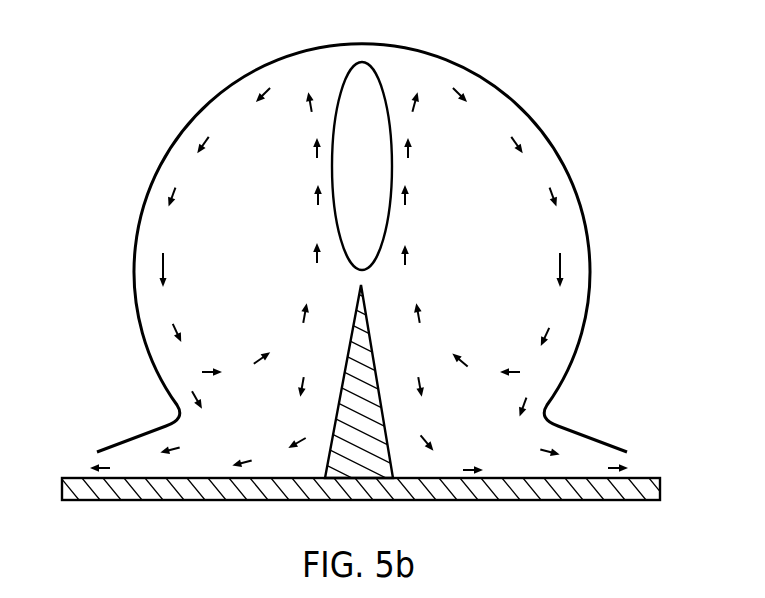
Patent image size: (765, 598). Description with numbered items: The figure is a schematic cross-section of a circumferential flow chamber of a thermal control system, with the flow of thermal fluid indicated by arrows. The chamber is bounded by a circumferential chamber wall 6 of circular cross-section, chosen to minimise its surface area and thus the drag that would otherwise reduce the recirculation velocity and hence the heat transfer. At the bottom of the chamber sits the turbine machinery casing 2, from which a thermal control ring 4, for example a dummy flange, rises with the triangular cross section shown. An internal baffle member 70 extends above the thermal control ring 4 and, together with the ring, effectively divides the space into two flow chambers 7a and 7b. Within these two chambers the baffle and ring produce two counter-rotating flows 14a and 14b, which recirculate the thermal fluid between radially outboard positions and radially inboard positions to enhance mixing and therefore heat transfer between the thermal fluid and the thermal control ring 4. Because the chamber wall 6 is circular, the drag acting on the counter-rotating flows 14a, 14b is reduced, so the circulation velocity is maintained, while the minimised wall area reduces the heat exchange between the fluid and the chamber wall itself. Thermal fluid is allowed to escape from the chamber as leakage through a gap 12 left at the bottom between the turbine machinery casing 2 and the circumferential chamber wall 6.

The turbine machinery casing 2 is at (555, 500).
The thermal control ring 4 is at (371, 343).
The circumferential chamber wall 6 is at (513, 97).
The flow chamber 7a is at (230, 183).
The flow chamber 7b is at (487, 207).
The gap 12 is at (632, 468).
The counter-rotating flow 14a is at (162, 263).
The counter-rotating flow 14b is at (562, 268).
The internal baffle member 70 is at (340, 85).